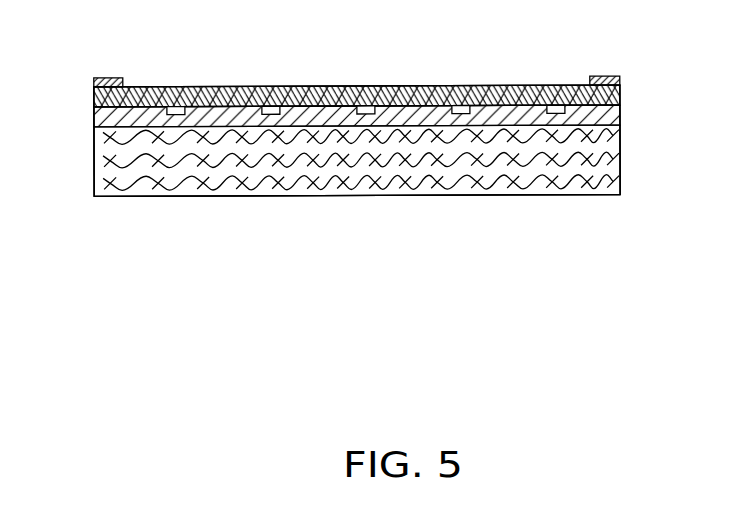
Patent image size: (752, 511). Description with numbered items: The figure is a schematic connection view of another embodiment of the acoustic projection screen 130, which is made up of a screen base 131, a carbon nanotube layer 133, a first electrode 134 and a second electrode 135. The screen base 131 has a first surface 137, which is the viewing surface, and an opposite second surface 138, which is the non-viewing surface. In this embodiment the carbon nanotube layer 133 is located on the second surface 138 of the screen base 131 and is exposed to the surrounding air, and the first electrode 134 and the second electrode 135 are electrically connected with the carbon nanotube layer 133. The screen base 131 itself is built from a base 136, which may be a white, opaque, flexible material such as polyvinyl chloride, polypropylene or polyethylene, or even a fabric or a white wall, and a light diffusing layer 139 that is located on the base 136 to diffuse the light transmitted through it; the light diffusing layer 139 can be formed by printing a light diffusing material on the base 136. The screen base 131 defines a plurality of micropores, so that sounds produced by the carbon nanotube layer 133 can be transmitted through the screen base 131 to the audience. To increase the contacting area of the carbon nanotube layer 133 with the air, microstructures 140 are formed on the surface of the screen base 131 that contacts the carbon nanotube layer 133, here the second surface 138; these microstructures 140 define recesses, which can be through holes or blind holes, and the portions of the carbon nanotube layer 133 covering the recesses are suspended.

The acoustic projection screen 130 is at (354, 69).
The screen base 131 is at (692, 103).
The carbon nanotube layer 133 is at (608, 98).
The first electrode 134 is at (101, 77).
The second electrode 135 is at (615, 77).
The base 136 is at (597, 170).
The first surface 137 is at (163, 94).
The second surface 138 is at (233, 208).
The light diffusing layer 139 is at (617, 110).
The microstructures 140 is at (168, 111).